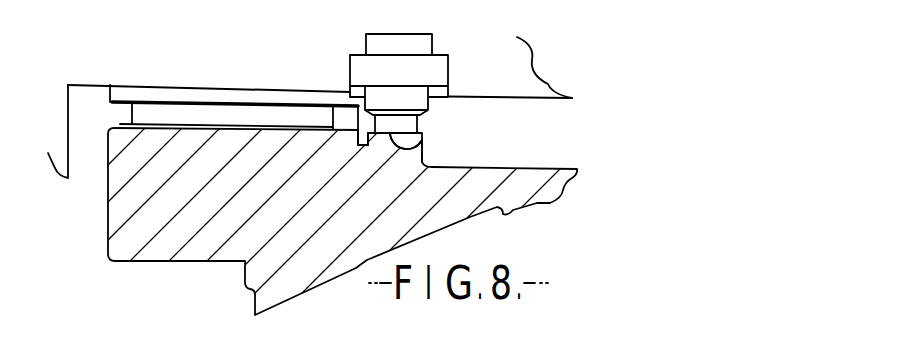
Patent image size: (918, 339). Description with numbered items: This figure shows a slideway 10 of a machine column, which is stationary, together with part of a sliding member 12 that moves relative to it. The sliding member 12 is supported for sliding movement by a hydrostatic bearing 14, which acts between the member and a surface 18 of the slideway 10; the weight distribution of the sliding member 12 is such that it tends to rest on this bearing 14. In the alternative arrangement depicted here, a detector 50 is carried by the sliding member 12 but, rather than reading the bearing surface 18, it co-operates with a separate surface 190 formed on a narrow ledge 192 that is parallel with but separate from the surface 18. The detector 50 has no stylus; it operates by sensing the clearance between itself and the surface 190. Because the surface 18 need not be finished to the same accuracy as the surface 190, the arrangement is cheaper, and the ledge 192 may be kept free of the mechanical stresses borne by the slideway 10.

The slideway 10 is at (202, 245).
The sliding member 12 is at (527, 78).
The hydrostatic bearing 14 is at (237, 117).
The surface 18 is at (120, 123).
The detector 50 is at (425, 73).
The surface 190 is at (394, 158).
The ledge 192 is at (388, 145).